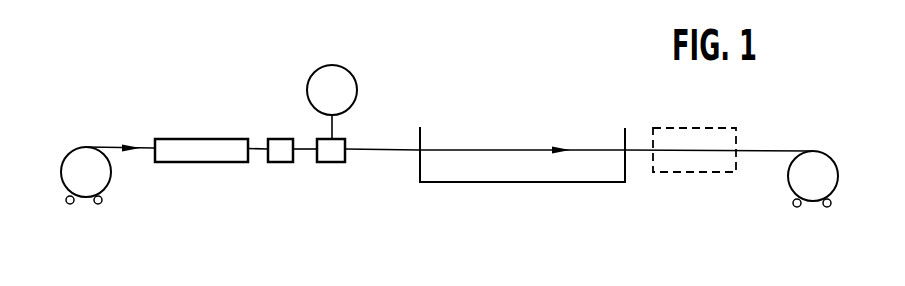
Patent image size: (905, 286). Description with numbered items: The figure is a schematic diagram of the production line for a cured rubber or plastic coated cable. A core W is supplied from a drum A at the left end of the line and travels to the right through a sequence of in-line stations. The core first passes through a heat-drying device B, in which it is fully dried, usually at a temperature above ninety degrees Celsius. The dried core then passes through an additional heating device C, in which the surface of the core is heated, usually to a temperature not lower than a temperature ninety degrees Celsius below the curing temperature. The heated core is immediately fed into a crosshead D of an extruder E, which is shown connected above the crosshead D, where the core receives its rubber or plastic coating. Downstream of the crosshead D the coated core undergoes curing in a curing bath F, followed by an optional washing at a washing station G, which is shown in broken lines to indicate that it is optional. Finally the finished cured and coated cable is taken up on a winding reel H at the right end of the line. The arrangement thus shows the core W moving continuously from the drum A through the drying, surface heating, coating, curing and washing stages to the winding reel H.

The core W is at (145, 145).
The drum A is at (100, 177).
The heat-drying device B is at (220, 164).
The additional heating device C is at (282, 163).
The crosshead D is at (335, 163).
The extruder E is at (347, 90).
The curing bath F is at (495, 183).
The washing station G is at (737, 130).
The winding reel H is at (790, 180).